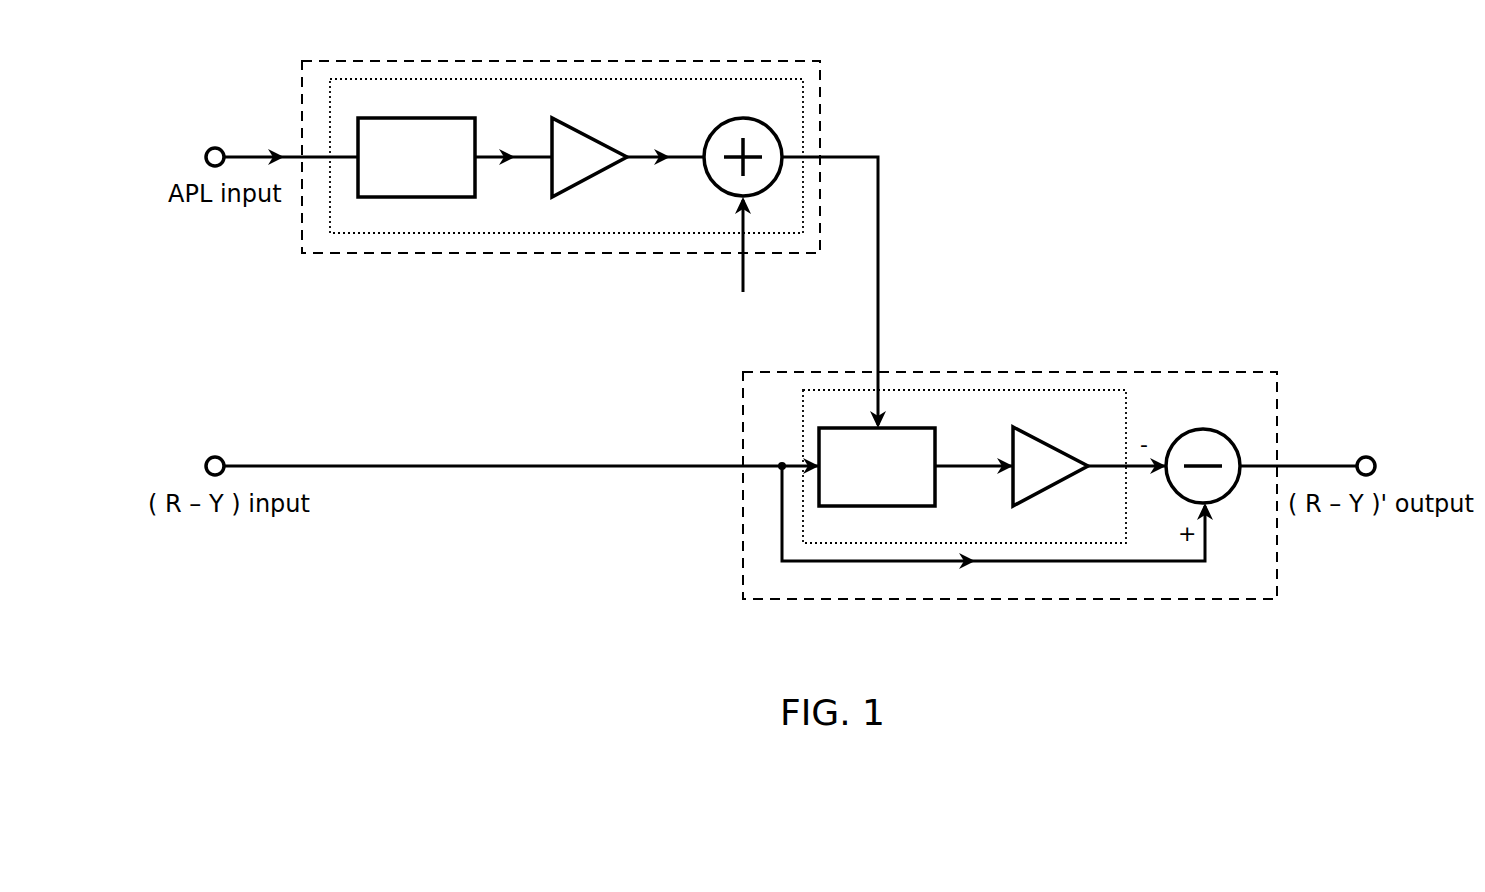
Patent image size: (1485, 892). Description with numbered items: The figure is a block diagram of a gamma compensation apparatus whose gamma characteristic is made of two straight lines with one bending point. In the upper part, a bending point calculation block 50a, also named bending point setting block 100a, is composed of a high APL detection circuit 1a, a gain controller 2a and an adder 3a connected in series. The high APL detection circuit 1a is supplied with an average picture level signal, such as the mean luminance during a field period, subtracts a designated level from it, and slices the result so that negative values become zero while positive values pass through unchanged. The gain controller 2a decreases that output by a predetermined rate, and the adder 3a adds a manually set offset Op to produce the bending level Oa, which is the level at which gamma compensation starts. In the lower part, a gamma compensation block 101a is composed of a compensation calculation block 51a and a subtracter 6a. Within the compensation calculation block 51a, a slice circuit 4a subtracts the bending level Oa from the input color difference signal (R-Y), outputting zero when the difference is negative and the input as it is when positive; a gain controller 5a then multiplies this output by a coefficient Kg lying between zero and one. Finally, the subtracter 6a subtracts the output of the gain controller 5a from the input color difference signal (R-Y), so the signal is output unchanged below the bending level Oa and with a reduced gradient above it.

The high APL detection circuit 1a is at (405, 118).
The gain controller 2a is at (590, 132).
The adder 3a is at (758, 120).
The slice circuit 4a is at (900, 428).
The gain controller 5a is at (1055, 440).
The subtracter 6a is at (1210, 430).
The bending point calculation block 50a is at (445, 236).
The bending point setting block 100a is at (535, 256).
The compensation calculation block 51a is at (913, 543).
The gamma compensation block 101a is at (1063, 600).
The bending level Oa is at (879, 283).
The offset Op is at (746, 261).